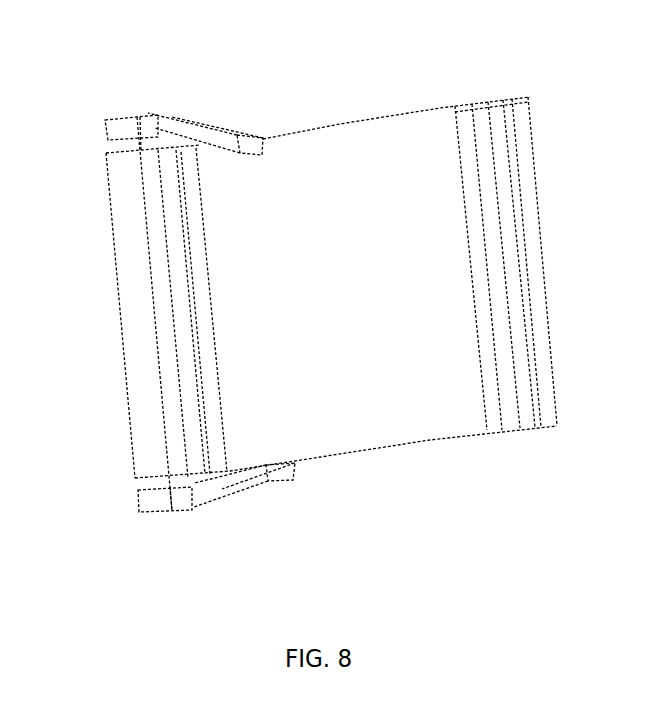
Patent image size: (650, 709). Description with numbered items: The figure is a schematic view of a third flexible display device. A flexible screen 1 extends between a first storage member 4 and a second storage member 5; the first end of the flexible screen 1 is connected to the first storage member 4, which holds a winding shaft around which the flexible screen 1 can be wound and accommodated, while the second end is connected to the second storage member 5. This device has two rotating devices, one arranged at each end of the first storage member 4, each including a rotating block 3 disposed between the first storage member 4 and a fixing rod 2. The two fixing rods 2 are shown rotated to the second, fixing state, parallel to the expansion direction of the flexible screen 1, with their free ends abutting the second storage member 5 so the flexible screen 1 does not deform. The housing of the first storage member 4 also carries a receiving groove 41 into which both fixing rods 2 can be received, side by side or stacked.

The flexible screen 1 is at (368, 140).
The fixing rod 2 is at (202, 126).
The rotating block 3 is at (112, 120).
The first storage member 4 is at (133, 313).
The receiving groove 41 is at (170, 238).
The second storage member 5 is at (528, 182).